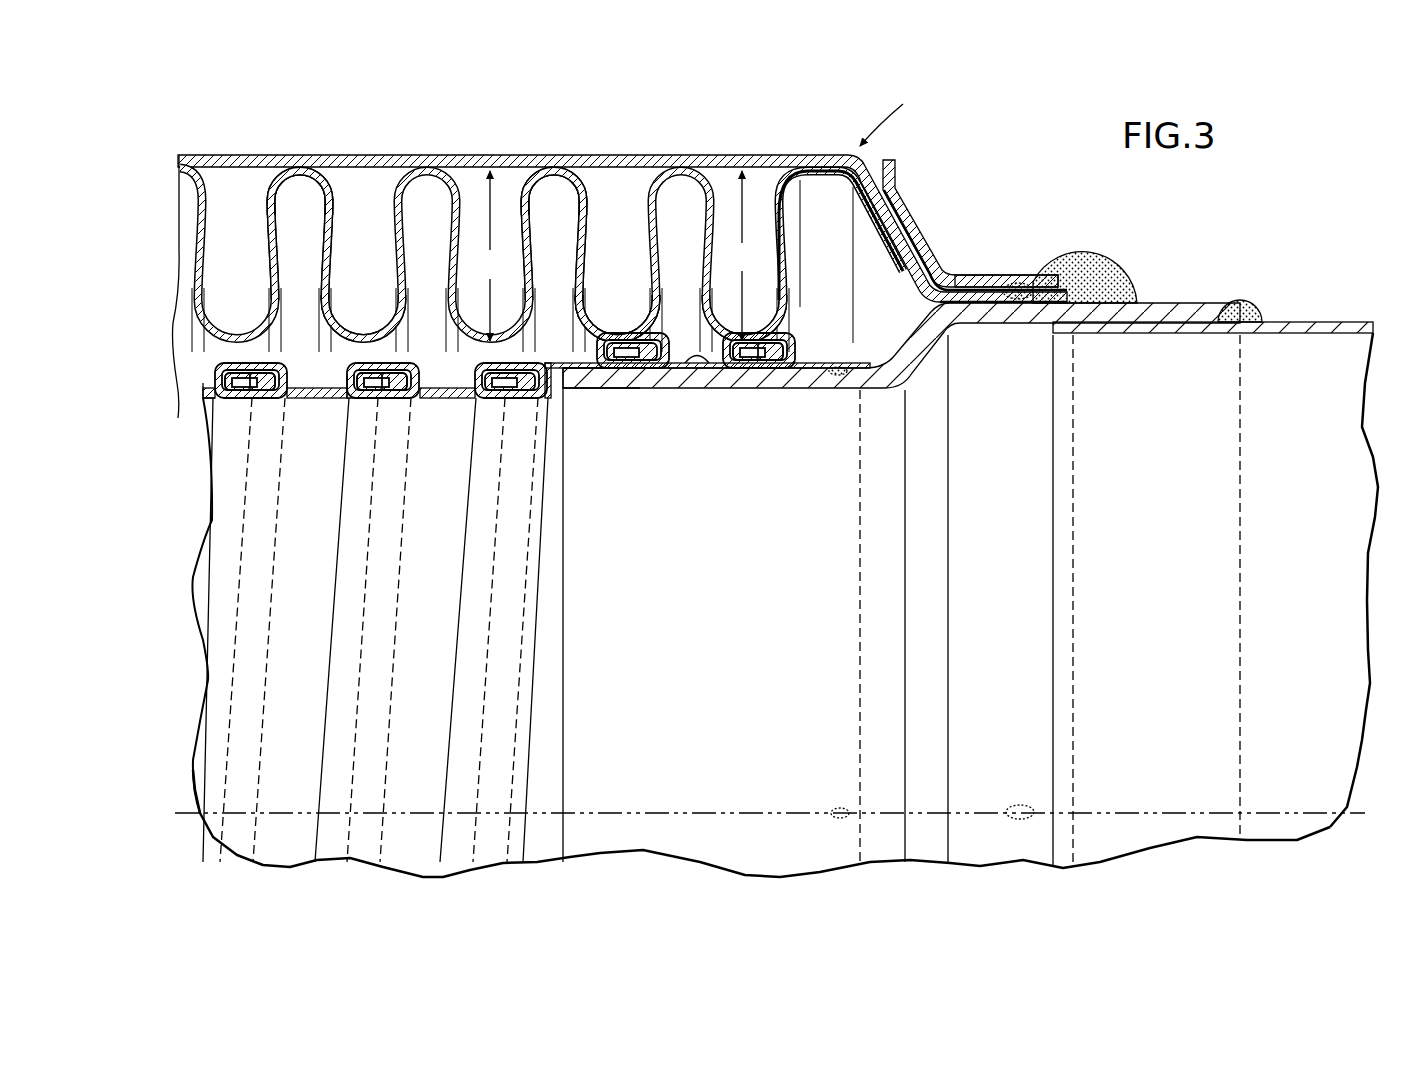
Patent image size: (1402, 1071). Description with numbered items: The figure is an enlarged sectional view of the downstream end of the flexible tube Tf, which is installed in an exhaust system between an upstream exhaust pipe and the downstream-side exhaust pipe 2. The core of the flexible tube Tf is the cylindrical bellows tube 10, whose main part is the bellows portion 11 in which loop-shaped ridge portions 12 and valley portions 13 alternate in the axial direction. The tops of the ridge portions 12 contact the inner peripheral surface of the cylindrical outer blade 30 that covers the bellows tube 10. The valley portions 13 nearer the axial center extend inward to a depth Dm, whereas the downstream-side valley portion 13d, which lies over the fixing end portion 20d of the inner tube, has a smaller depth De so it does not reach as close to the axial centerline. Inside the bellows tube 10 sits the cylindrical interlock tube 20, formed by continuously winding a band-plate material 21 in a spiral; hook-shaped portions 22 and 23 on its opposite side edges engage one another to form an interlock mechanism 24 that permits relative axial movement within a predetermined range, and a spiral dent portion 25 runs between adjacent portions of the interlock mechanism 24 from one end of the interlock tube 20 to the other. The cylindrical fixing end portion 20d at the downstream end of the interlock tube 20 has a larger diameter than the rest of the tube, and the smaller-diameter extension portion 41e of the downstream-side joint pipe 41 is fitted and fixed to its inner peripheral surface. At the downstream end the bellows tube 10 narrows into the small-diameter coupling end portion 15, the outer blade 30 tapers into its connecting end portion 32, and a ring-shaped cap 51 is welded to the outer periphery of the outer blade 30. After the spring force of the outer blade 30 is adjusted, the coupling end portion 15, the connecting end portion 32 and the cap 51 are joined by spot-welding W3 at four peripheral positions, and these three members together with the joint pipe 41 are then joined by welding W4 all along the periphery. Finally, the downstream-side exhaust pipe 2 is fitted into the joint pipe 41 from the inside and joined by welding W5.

The downstream-side exhaust pipe 2 is at (1337, 323).
The bellows tube 10 is at (606, 219).
The bellows portion 11 is at (398, 118).
The ridge portion 12 is at (331, 240).
The valley portion 13 is at (366, 335).
The downstream-side valley portion 13d is at (730, 325).
The downstream-side coupling end portion 15 is at (1012, 287).
The interlock tube 20 is at (531, 555).
The downstream-side fixing end portion 20d is at (697, 364).
The band-plate material 21 is at (358, 400).
The hook-shaped portion 22 is at (250, 381).
The hook-shaped portion 23 is at (268, 378).
The interlock mechanism 24 is at (510, 417).
The dent portion 25 is at (313, 390).
The outer blade 30 is at (518, 150).
The downstream-side connecting end portion 32 is at (980, 283).
The downstream-side joint pipe 41 is at (901, 582).
The extension portion 41e is at (650, 386).
The downstream-side cap 51 is at (975, 221).
The spot-welding W3 is at (1015, 302).
The welding W4 is at (1093, 268).
The welding W5 is at (1245, 296).
The flexible tube Tf is at (895, 113).
The depth of valley portions Dm is at (491, 256).
The depth of end valley portions De is at (741, 256).